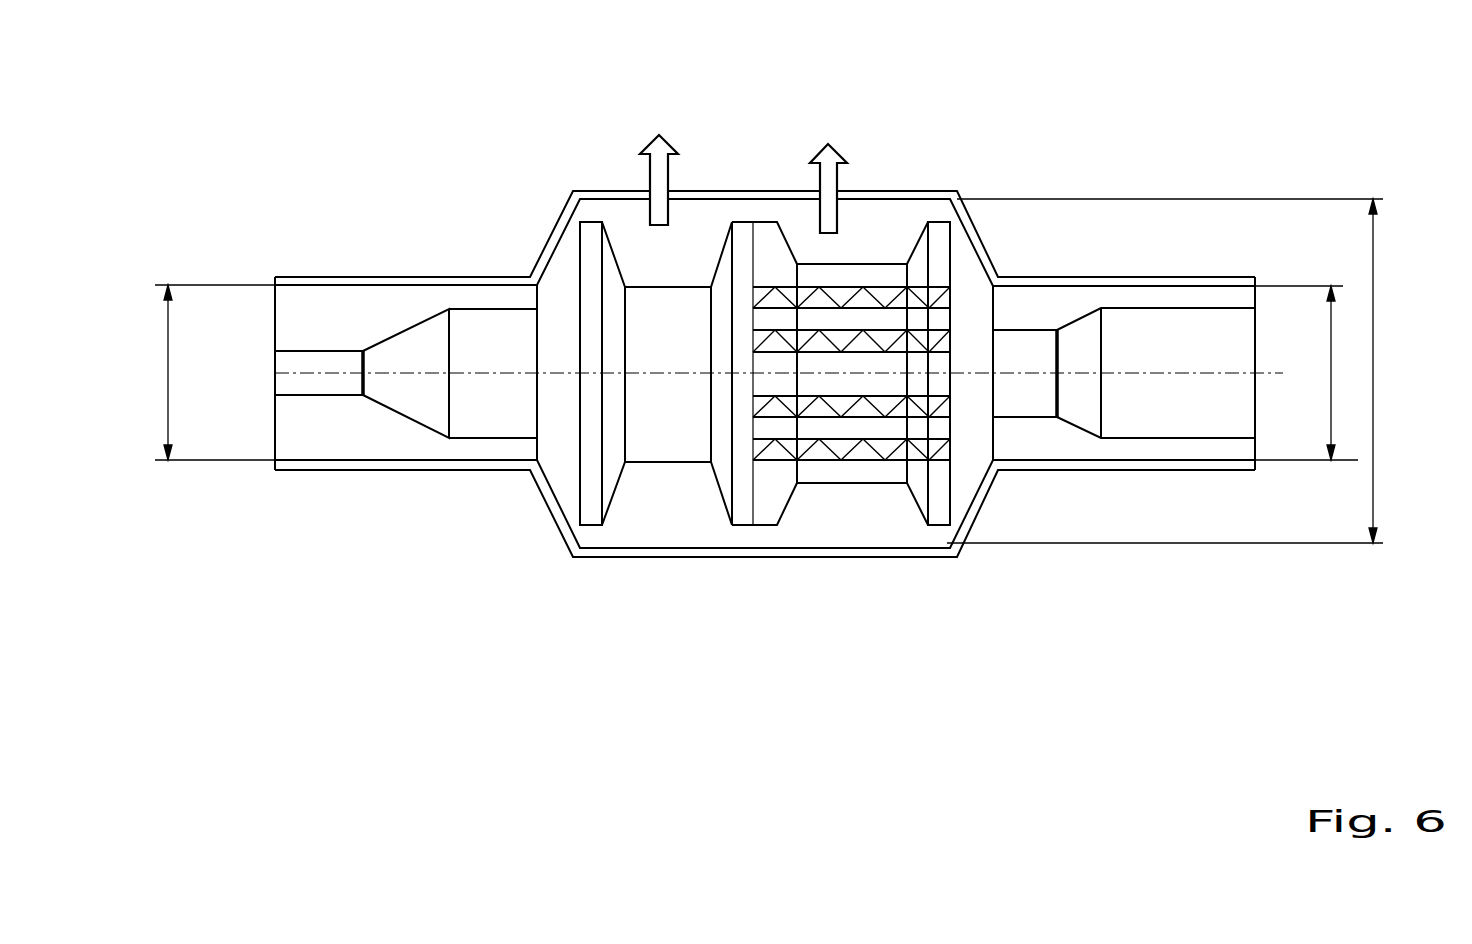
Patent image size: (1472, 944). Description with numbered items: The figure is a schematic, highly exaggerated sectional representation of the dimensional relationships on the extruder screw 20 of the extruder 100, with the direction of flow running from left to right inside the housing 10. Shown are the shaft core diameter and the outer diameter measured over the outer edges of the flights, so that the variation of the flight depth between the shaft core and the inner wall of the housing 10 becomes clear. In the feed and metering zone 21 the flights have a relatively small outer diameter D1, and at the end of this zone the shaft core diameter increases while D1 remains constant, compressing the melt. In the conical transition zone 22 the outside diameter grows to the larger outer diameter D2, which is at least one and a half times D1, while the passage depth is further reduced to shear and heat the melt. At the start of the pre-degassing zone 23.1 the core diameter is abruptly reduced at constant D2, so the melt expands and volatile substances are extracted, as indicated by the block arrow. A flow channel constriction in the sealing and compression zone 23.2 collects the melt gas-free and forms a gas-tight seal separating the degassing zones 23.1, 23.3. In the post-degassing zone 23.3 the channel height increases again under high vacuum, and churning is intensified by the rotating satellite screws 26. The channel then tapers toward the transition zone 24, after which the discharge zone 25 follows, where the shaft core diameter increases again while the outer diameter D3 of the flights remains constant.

The exhaust gas treatment device 100 is at (185, 110).
The housing 10 is at (346, 275).
The extruder screw 20 is at (275, 363).
The feed and metering zone 21 is at (407, 414).
The transition zone 22 is at (561, 413).
The pre-degassing zone 23.1 is at (641, 267).
The sealing and compression zone 23.2 is at (748, 240).
The post-degassing zone 23.3 is at (858, 245).
The transition zone 24 is at (968, 425).
The discharge zone 25 is at (1139, 417).
The satellite screws 26 is at (838, 448).
The outer diameter D1 is at (165, 377).
The outer diameter D2 is at (1373, 353).
The outer diameter D3 is at (1333, 392).